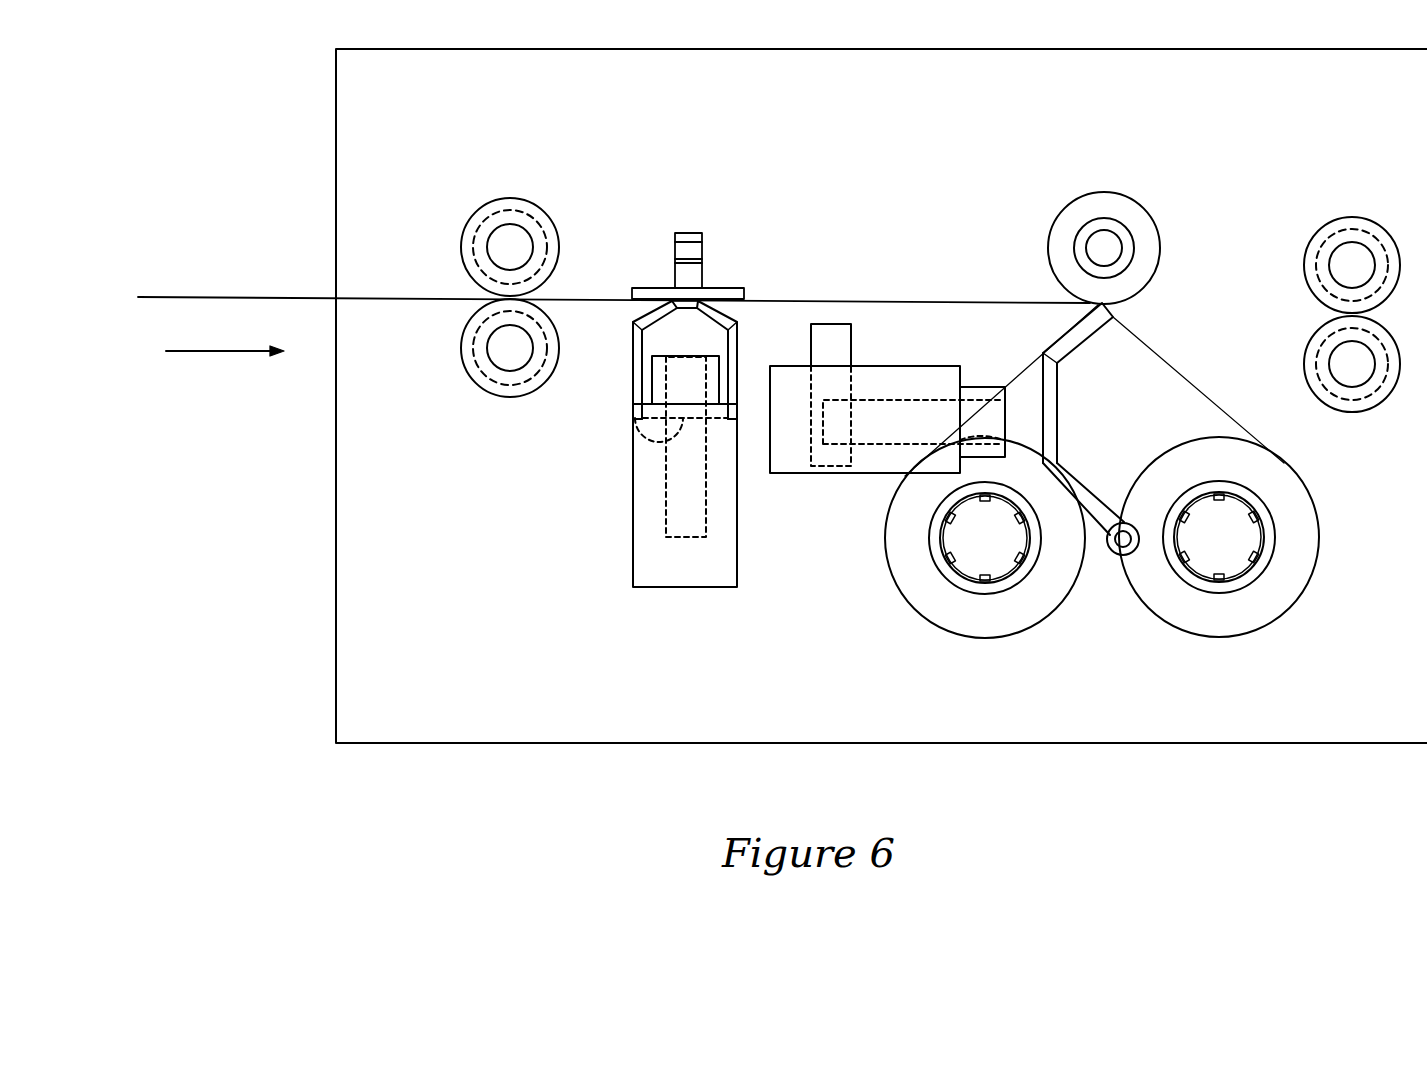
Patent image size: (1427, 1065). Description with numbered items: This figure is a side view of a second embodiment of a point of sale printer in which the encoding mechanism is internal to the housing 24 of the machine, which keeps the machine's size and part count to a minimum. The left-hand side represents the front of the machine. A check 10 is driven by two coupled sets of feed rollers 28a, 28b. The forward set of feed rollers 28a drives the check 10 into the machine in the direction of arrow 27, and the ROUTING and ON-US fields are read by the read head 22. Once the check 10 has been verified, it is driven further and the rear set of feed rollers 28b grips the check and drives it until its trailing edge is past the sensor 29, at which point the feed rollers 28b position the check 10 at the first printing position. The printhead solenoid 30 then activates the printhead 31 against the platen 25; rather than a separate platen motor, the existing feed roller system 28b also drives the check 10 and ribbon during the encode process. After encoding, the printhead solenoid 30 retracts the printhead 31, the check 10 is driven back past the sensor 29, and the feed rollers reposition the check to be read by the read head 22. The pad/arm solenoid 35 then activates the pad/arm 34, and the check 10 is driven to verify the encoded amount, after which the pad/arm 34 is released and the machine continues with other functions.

The check 10 is at (208, 297).
The read head 22 is at (633, 363).
The housing 24 is at (947, 49).
The platen 25 is at (1103, 193).
The arrow 27 is at (203, 352).
The forward set of feed rollers 28a is at (510, 197).
The rear set of feed rollers 28b is at (1352, 217).
The sensor 29 is at (831, 324).
The printhead solenoid 30 is at (782, 473).
The printhead 31 is at (1058, 395).
The pad/arm 34 is at (693, 233).
The pad/arm solenoid 35 is at (716, 587).